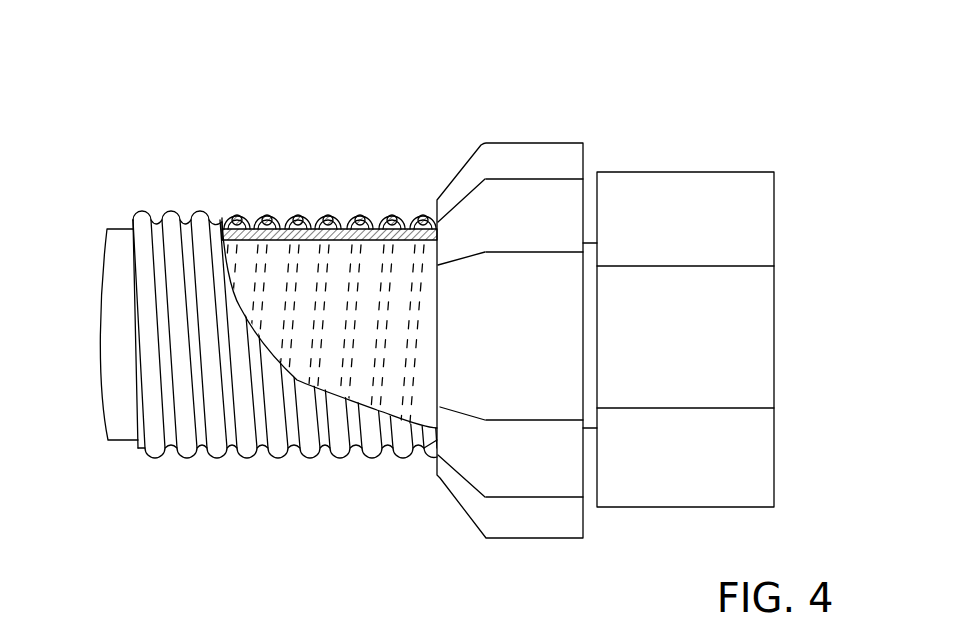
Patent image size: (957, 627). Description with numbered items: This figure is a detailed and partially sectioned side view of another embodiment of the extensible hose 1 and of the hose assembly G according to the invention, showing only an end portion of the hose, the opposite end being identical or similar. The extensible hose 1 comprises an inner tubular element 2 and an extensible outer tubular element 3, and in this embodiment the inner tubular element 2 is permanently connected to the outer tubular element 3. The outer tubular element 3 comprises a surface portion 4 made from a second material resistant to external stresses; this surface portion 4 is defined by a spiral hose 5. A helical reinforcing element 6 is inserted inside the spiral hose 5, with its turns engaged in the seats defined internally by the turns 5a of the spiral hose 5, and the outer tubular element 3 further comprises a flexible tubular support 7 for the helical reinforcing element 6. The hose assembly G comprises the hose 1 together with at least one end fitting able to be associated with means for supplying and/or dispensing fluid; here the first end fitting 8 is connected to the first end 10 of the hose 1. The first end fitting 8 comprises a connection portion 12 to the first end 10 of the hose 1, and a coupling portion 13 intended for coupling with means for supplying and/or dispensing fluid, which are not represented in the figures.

The extensible hose 1 is at (290, 185).
The inner tubular element 2 is at (124, 420).
The outer tubular element 3 is at (334, 192).
The surface portion 4 is at (172, 196).
The spiral hose 5 is at (218, 452).
The turns 5a is at (234, 216).
The helical reinforcing element 6 is at (384, 258).
The flexible tubular support 7 is at (363, 217).
The first end fitting 8 is at (705, 152).
The first end 10 is at (430, 442).
The connection portion 12 is at (540, 140).
The coupling portion 13 is at (733, 298).
The hose assembly G is at (640, 140).